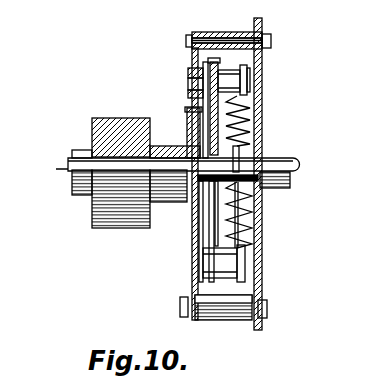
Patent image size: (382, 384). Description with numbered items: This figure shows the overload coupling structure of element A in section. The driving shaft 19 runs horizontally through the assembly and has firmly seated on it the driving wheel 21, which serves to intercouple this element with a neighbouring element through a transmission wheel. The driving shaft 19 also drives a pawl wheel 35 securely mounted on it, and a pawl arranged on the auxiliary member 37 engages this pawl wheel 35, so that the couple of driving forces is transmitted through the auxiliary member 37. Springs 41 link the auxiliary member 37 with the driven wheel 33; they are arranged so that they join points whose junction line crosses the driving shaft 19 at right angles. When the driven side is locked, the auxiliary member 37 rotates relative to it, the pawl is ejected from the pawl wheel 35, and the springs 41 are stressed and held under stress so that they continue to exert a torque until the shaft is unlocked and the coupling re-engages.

The driving shaft 19 is at (166, 146).
The driving wheel 21 is at (93, 119).
The driven wheel 33 is at (190, 55).
The pawl wheel 35 is at (186, 125).
The auxiliary member 37 is at (191, 62).
The springs 41 is at (262, 115).